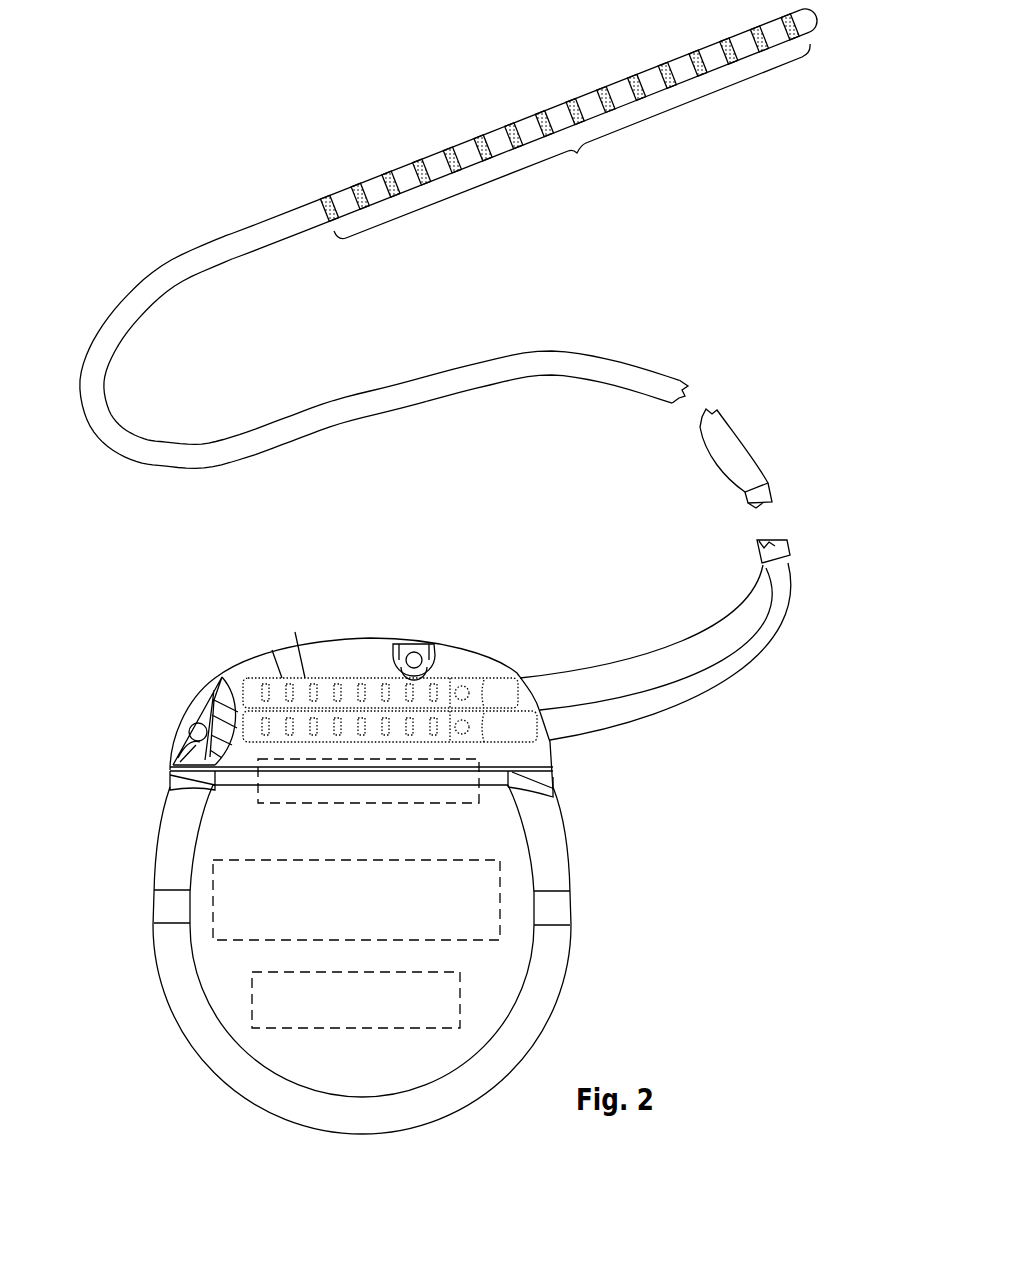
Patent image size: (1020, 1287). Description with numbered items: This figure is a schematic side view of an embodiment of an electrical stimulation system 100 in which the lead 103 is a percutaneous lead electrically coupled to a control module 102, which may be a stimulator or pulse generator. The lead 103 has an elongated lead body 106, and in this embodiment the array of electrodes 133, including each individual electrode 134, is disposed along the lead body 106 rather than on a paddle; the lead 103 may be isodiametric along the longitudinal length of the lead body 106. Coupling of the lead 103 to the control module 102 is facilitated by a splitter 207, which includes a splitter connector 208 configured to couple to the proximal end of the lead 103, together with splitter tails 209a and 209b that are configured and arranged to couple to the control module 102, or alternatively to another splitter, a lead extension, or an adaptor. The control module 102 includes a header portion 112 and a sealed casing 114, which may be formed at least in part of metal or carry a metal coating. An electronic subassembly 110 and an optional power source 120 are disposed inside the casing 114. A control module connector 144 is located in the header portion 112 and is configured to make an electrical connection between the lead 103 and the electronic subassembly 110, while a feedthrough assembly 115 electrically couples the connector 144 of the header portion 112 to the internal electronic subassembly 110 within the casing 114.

The electrical stimulation system 100 is at (184, 112).
The control module 102 is at (109, 653).
The lead 103 is at (122, 220).
The lead body 106 is at (598, 367).
The electronic subassembly 110 is at (230, 903).
The header portion 112 is at (194, 673).
The sealed casing 114 is at (117, 840).
The feedthrough assembly 115 is at (480, 800).
The power source 120 is at (270, 1003).
The array of electrodes 133 is at (566, 126).
The electrode 134 is at (606, 93).
The control module connector 144 is at (390, 675).
The splitter 207 is at (668, 578).
The splitter connector 208 is at (750, 517).
The splitter tail 209a is at (650, 664).
The splitter tail 209b is at (727, 668).